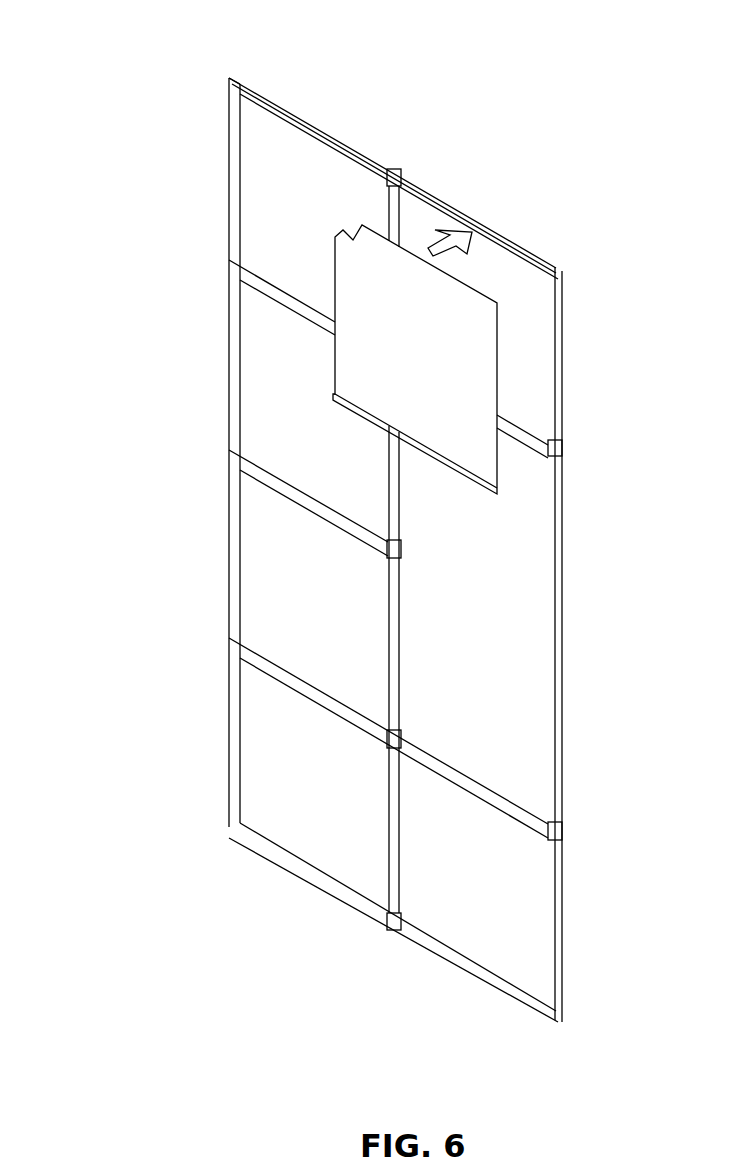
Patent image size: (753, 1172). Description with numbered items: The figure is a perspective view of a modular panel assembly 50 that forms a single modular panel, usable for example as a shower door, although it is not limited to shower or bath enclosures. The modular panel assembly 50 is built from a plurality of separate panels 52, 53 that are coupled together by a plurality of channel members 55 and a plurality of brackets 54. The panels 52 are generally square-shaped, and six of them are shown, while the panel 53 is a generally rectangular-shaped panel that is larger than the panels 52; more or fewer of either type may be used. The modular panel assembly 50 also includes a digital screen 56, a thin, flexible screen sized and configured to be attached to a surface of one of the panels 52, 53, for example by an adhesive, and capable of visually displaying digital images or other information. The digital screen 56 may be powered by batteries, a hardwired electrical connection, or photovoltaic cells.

The modular panel assembly 50 is at (130, 66).
The panels 52 is at (288, 142).
The panel 53 is at (523, 592).
The brackets 54 is at (228, 456).
The channel members 55 is at (262, 667).
The digital screen 56 is at (477, 338).